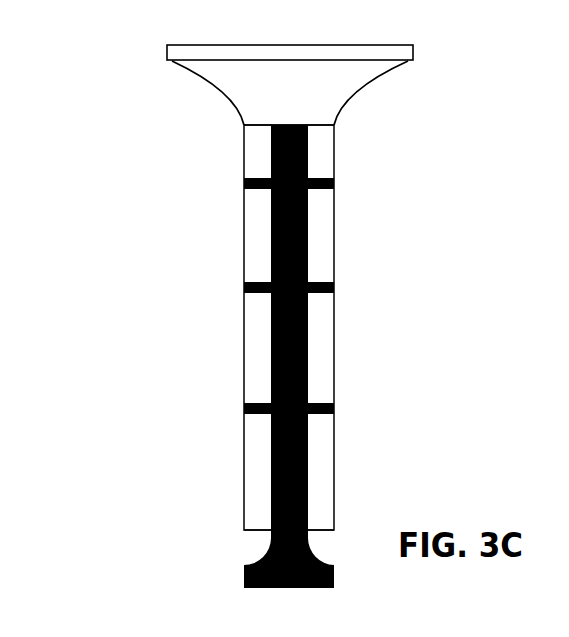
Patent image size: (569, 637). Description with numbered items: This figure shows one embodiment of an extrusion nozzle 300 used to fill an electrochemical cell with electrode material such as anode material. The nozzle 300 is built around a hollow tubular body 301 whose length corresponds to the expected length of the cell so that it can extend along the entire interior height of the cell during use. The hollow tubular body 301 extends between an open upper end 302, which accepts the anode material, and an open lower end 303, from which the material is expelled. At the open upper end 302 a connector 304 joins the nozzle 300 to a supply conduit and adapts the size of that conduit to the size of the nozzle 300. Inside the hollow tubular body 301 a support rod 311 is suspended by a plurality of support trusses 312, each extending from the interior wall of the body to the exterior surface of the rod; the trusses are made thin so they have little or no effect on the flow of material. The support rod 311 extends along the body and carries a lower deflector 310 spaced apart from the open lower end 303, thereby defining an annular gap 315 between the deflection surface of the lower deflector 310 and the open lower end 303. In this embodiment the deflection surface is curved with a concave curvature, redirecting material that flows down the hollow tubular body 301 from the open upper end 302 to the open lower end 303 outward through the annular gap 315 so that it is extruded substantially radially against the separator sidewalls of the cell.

The nozzle 300 is at (455, 45).
The hollow tubular body 301 is at (335, 252).
The open upper end 302 is at (256, 127).
The open lower end 303 is at (323, 528).
The connector 304 is at (207, 77).
The lower deflector 310 is at (335, 588).
The support rod 311 is at (307, 367).
The support trusses 312 is at (255, 293).
The annular gap 315 is at (240, 530).